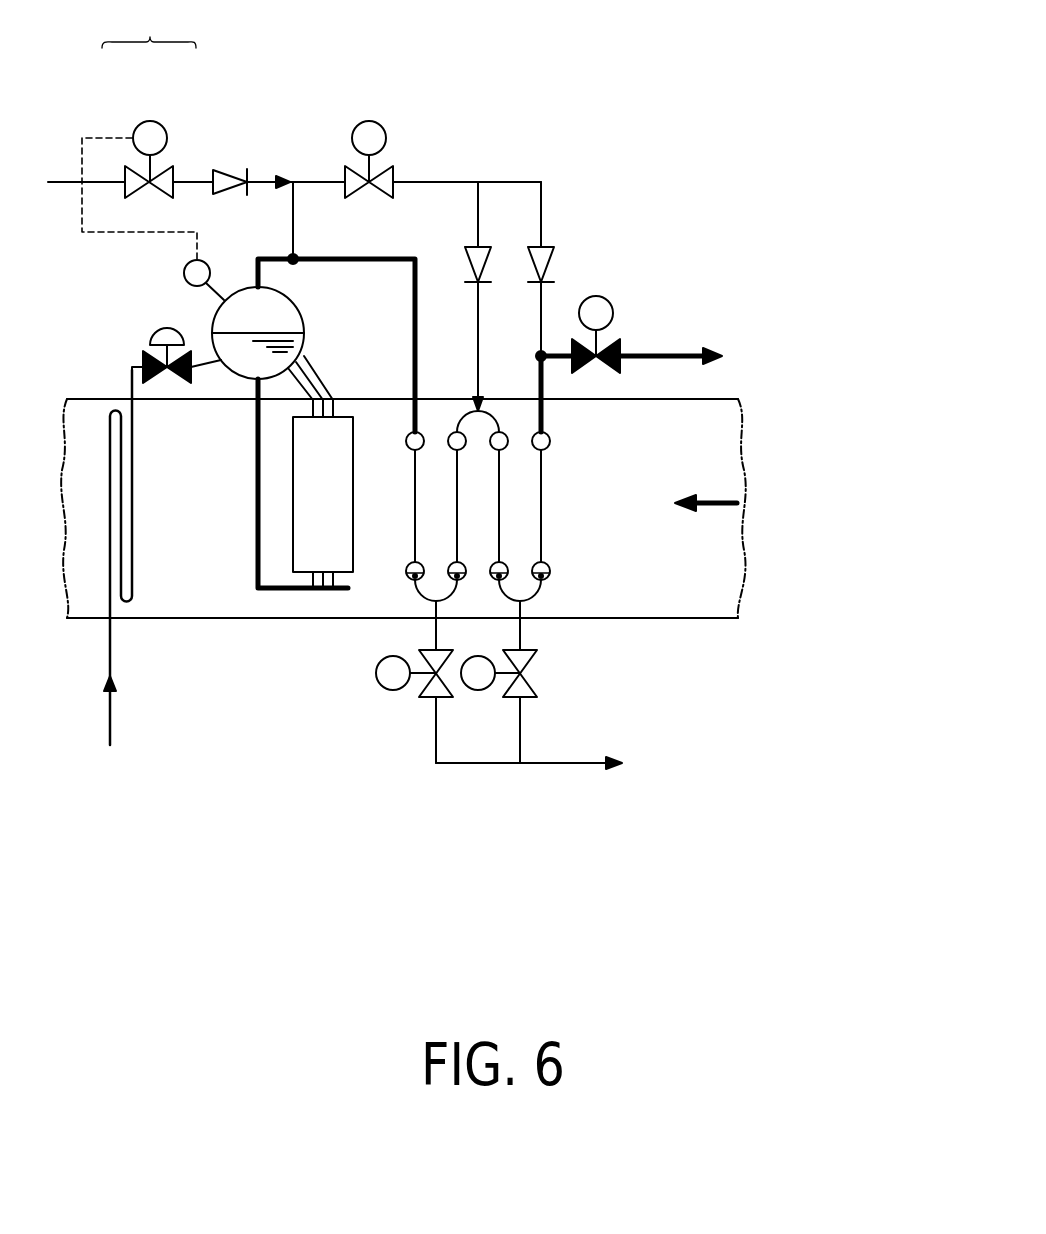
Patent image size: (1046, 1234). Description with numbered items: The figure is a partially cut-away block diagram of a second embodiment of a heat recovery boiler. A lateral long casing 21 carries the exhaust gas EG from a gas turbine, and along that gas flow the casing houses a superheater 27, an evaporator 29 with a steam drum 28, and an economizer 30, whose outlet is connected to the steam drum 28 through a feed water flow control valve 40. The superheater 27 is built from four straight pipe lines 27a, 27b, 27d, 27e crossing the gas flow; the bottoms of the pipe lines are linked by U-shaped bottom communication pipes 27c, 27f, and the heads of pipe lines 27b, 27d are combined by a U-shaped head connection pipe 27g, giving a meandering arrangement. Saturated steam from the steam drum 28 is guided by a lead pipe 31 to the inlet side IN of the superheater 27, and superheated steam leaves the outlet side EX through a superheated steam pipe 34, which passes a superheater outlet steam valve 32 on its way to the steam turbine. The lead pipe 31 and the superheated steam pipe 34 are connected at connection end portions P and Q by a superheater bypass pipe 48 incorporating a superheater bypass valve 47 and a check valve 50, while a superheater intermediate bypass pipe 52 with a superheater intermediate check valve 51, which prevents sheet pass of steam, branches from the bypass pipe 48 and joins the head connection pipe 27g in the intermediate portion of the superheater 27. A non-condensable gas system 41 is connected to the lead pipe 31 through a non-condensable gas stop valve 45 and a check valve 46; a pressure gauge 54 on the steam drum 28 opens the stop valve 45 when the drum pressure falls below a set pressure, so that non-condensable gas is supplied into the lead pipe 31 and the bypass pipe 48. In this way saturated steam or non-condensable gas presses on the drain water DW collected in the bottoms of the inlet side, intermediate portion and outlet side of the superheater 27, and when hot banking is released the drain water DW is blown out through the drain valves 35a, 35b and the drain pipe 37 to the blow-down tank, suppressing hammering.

The casing 21 is at (227, 618).
The superheater 27 is at (557, 463).
The straight pipe line 27a is at (415, 533).
The straight pipe line 27b is at (457, 490).
The U-shaped bottom communication pipe 27c is at (418, 591).
The straight pipe line 27d is at (499, 514).
The straight pipe line 27e is at (542, 538).
The U-shaped bottom communication pipe 27f is at (540, 591).
The U-shaped head connection pipe 27g is at (470, 411).
The steam drum 28 is at (300, 315).
The evaporator 29 is at (293, 479).
The economizer 30 is at (135, 503).
The lead pipe 31 is at (380, 262).
The superheater outlet steam valve 32 is at (608, 302).
The superheated steam pipe 34 is at (690, 350).
The drain valve 35a is at (393, 690).
The drain valve 35b is at (478, 690).
The drain pipe 37 is at (563, 765).
The feed water flow control valve 40 is at (148, 338).
The non-condensable gas system 41 is at (149, 27).
The non-condensable gas stop valve 45 is at (150, 120).
The check valve 46 is at (222, 170).
The superheater bypass valve 47 is at (369, 120).
The superheater bypass pipe 48 is at (457, 182).
The check valve 50 is at (546, 250).
The superheater intermediate check valve 51 is at (482, 250).
The superheater intermediate bypass pipe 52 is at (478, 332).
The pressure gauge 54 is at (184, 273).
The connection end portion P is at (293, 259).
The connection end portion Q is at (541, 356).
The inlet side IN is at (408, 437).
The outlet side EX is at (550, 436).
The drain water DW is at (550, 571).
The exhaust gas EG is at (712, 500).